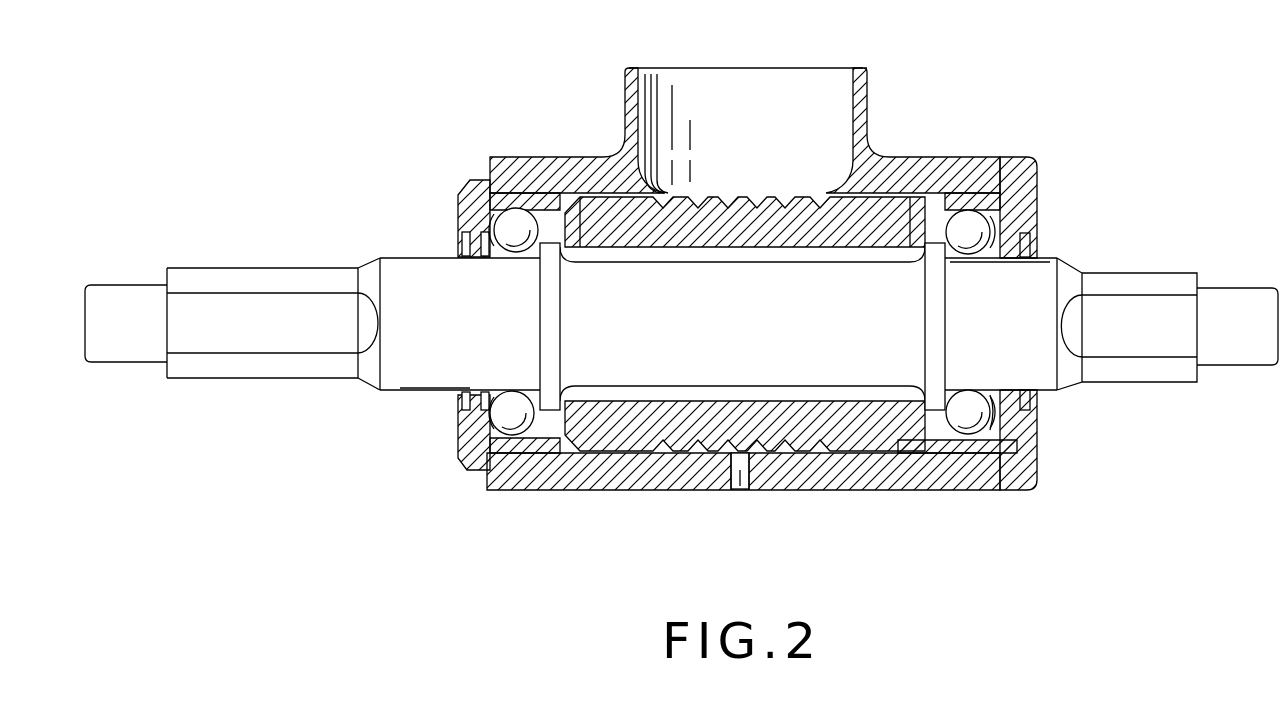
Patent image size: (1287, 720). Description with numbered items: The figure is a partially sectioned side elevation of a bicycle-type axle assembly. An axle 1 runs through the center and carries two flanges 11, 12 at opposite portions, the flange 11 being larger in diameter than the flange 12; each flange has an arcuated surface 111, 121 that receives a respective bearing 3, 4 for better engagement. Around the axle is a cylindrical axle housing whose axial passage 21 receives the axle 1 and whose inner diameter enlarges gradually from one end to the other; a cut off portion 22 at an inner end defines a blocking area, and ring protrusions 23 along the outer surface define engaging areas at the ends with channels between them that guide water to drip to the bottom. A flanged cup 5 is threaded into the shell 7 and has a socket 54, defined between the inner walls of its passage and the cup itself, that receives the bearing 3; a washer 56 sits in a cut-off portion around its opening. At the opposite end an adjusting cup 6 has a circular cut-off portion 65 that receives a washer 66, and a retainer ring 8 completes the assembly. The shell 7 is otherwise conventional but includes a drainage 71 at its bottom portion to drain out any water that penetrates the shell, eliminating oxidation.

The axle 1 is at (393, 272).
The flange 11 is at (462, 392).
The surface 111 is at (440, 270).
The flange 12 is at (935, 312).
The surface 121 is at (995, 185).
The passage 21 is at (878, 248).
The cut off portion 22 is at (571, 196).
The ring protrusions 23 is at (600, 197).
The bearing 3 is at (541, 437).
The bearing 4 is at (932, 432).
The flanged cup 5 is at (467, 210).
The socket 54 is at (473, 182).
The washer 56 is at (543, 343).
The adjusting cup 6 is at (1030, 430).
The circular cut-off portion 65 is at (988, 432).
The washer 66 is at (1033, 402).
The shell 7 is at (938, 158).
The drainage 71 is at (740, 488).
The retainer ring 8 is at (1037, 163).